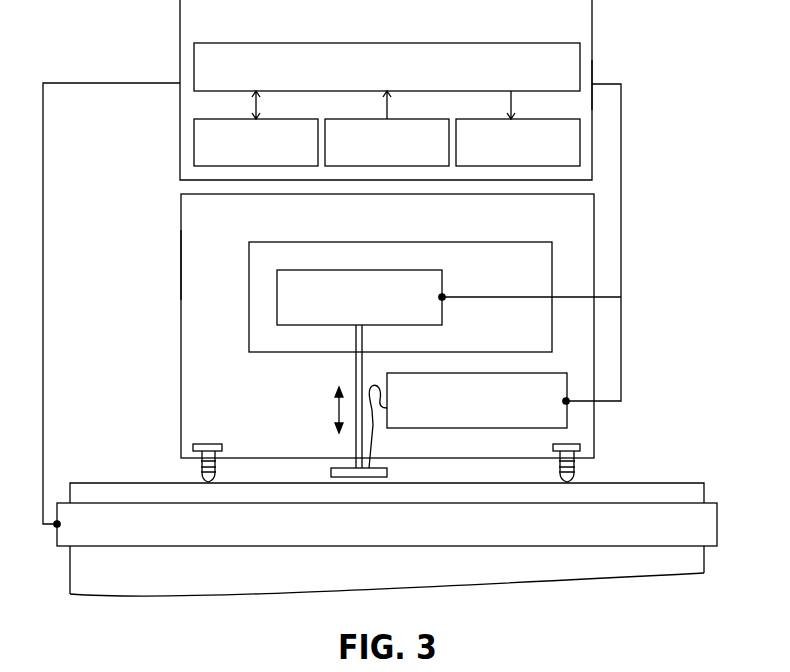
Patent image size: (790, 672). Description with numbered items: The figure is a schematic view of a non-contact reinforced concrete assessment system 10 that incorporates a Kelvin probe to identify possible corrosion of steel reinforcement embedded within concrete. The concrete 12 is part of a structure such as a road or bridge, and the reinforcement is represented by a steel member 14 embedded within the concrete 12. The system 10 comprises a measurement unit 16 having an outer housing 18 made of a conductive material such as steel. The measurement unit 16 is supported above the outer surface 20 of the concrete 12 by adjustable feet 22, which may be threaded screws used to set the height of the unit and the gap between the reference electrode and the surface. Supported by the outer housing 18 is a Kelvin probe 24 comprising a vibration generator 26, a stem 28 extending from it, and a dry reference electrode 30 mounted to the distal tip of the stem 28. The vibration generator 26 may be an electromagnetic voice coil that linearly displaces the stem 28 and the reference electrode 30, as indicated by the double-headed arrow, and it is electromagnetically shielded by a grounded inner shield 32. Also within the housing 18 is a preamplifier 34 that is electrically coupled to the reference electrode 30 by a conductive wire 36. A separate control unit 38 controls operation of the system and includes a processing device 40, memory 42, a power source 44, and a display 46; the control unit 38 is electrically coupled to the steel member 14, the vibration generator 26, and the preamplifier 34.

The non-contact reinforced concrete assessment system 10 is at (685, 73).
The concrete 12 is at (150, 592).
The steel member 14 is at (398, 533).
The measurement unit 16 is at (417, 227).
The outer housing 18 is at (180, 263).
The outer surface 20 is at (663, 483).
The adjustable feet 22 is at (217, 432).
The Kelvin probe 24 is at (220, 328).
The vibration generator 26 is at (368, 308).
The stem 28 is at (356, 370).
The dry reference electrode 30 is at (340, 468).
The grounded inner shield 32 is at (490, 242).
The preamplifier 34 is at (486, 410).
The conductive wire 36 is at (373, 440).
The control unit 38 is at (363, 27).
The processing device 40 is at (498, 75).
The memory 42 is at (310, 153).
The power source 44 is at (438, 161).
The display 46 is at (568, 153).